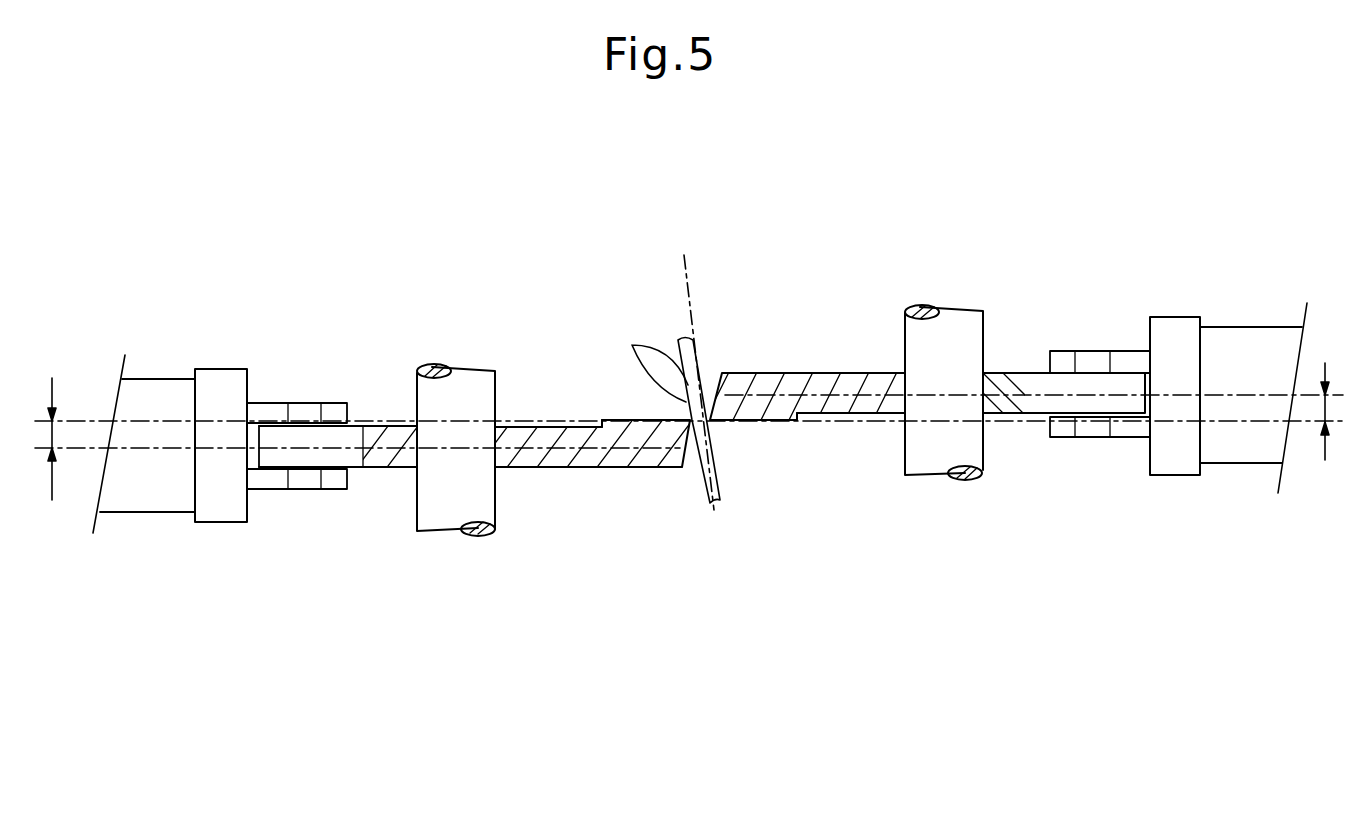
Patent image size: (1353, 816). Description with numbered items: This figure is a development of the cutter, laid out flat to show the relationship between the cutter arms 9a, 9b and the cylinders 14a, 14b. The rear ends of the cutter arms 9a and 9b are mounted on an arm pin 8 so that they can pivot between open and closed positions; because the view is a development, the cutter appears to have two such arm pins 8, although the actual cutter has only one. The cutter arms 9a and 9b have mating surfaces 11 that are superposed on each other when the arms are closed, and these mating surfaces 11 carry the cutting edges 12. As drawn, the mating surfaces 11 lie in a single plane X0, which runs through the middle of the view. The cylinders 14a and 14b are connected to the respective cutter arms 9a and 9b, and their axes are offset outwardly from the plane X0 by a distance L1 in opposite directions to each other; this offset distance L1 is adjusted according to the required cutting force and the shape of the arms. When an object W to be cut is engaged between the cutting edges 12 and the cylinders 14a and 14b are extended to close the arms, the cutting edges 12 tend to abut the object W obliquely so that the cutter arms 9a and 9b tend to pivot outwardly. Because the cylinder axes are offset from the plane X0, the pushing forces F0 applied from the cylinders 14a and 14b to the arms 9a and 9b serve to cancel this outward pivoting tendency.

The arm pin 8 is at (467, 388).
The cutter arm 9a is at (595, 457).
The cutter arm 9b is at (823, 378).
The mating surface 11 is at (622, 418).
The cutting edge 12 is at (668, 404).
The cylinder 14a is at (165, 500).
The cylinder 14b is at (1255, 340).
The object to be cut W is at (693, 365).
The pushing force F0 is at (530, 420).
The plane X0 is at (848, 422).
The offset distance L1 is at (1325, 410).